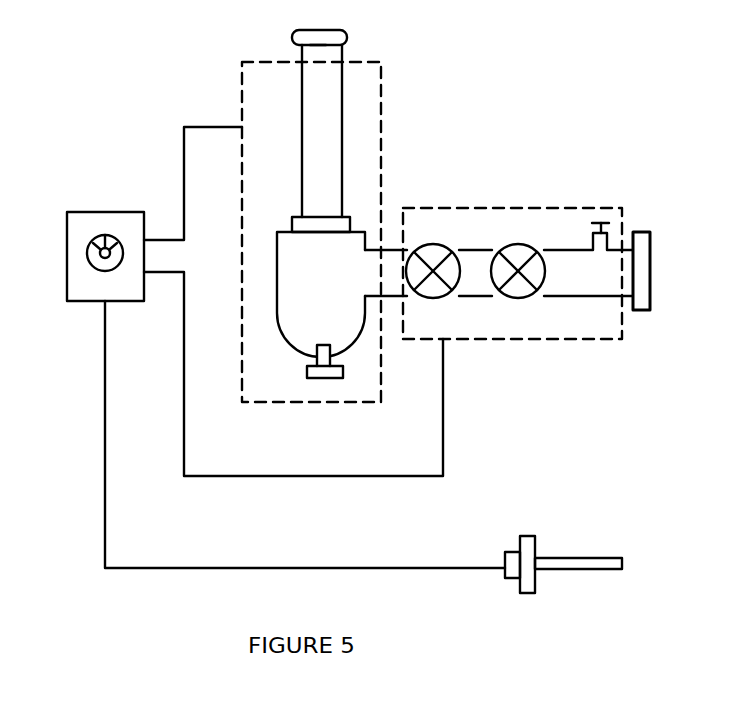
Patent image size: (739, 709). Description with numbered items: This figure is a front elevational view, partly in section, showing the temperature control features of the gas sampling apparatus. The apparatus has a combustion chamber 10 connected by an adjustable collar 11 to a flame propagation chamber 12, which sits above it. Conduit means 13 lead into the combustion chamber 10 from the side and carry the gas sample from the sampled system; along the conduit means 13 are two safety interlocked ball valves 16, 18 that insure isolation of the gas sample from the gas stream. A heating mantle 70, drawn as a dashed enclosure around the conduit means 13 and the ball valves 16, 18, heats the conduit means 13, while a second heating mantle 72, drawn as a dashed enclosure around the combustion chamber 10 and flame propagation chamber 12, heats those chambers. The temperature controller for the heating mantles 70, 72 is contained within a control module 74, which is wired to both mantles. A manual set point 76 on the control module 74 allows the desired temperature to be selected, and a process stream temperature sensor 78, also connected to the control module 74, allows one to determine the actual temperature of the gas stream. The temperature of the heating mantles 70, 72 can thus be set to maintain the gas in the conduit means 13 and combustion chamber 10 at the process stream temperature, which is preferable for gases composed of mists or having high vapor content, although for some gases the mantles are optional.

The combustion chamber 10 is at (334, 297).
The adjustable collar 11 is at (292, 217).
The flame propagation chamber 12 is at (347, 40).
The conduit means 13 is at (393, 250).
The safety interlocked ball valve 16 is at (445, 250).
The safety interlocked ball valve 18 is at (535, 250).
The heating mantle 70 is at (535, 206).
The heating mantle 72 is at (381, 95).
The control module 74 is at (110, 218).
The manual set point 76 is at (96, 265).
The process stream temperature sensor 78 is at (551, 559).